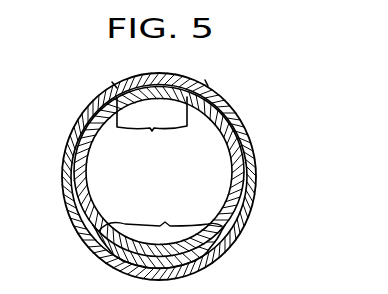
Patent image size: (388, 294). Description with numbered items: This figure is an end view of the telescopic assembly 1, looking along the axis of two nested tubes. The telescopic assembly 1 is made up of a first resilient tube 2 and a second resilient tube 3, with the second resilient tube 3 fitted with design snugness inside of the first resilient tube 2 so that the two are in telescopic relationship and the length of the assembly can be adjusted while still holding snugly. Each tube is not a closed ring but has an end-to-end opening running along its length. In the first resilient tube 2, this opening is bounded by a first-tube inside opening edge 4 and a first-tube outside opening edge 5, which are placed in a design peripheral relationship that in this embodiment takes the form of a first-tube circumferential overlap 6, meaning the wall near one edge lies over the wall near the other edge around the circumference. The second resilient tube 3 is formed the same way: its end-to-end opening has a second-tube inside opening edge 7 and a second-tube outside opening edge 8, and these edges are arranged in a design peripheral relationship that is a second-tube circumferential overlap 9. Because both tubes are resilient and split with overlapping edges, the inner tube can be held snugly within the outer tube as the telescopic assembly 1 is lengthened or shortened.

The telescopic assembly 1 is at (262, 136).
The first resilient tube 2 is at (85, 125).
The second resilient tube 3 is at (77, 156).
The first-tube inside opening edge 4 is at (221, 97).
The first-tube outside opening edge 5 is at (115, 88).
The first-tube circumferential overlap 6 is at (152, 124).
The second-tube inside opening edge 7 is at (99, 231).
The second-tube outside opening edge 8 is at (233, 228).
The second-tube circumferential overlap 9 is at (160, 213).